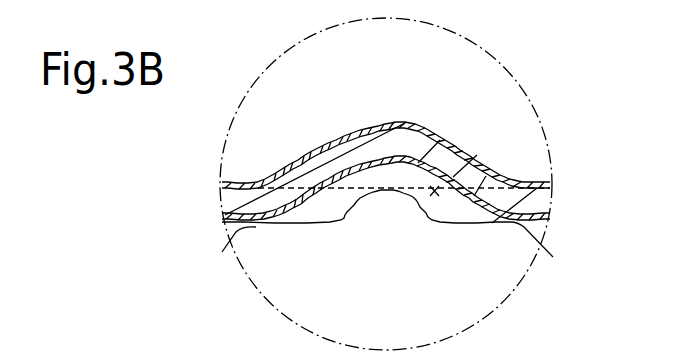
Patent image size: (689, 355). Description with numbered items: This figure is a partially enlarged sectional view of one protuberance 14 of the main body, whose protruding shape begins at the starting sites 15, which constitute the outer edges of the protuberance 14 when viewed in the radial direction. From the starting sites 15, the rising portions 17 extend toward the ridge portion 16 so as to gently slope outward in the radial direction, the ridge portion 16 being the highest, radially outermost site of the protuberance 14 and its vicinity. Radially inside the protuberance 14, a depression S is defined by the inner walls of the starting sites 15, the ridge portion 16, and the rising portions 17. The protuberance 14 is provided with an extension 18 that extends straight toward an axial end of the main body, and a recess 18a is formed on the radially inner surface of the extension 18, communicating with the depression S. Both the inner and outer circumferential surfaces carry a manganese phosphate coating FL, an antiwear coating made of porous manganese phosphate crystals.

The protuberance 14 is at (433, 129).
The starting site 15 is at (386, 255).
The ridge portion 16 is at (390, 121).
The rising portion 17 is at (311, 152).
The extension 18 is at (335, 166).
The recess 18a is at (366, 200).
The depression S is at (435, 196).
The manganese phosphate coating FL is at (488, 166).